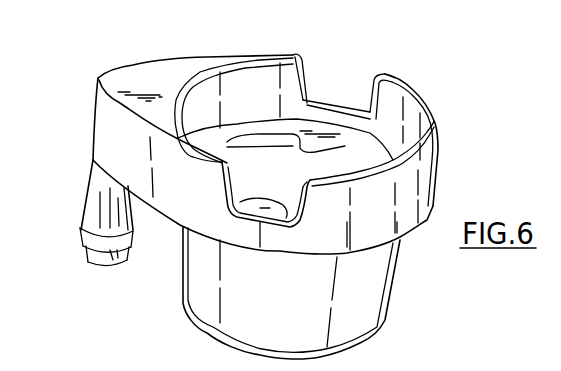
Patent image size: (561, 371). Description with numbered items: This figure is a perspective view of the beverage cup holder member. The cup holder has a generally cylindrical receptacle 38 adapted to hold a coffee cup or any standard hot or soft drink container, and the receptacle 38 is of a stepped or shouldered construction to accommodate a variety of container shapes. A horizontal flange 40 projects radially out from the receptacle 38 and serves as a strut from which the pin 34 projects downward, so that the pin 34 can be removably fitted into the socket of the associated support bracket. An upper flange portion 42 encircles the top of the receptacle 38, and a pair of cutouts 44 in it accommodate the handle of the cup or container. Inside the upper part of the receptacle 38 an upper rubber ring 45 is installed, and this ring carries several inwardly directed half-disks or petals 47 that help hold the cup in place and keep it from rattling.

The pin 34 is at (88, 190).
The receptacle 38 is at (388, 274).
The horizontal flange 40 is at (159, 82).
The upper flange portion 42 is at (437, 180).
The cutouts 44 is at (348, 68).
The upper rubber ring 45 is at (295, 55).
The petals 47 is at (317, 153).